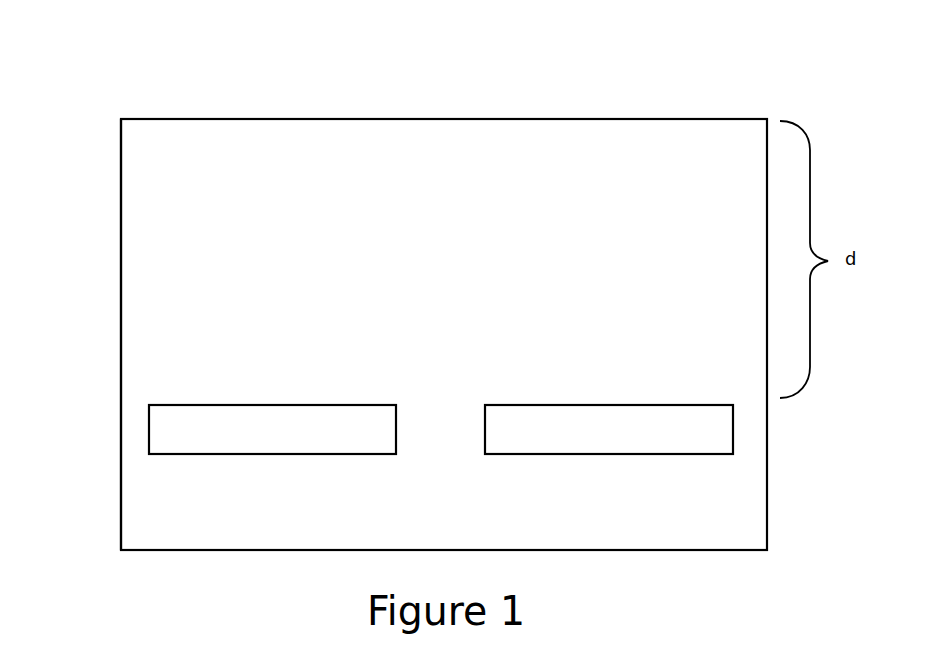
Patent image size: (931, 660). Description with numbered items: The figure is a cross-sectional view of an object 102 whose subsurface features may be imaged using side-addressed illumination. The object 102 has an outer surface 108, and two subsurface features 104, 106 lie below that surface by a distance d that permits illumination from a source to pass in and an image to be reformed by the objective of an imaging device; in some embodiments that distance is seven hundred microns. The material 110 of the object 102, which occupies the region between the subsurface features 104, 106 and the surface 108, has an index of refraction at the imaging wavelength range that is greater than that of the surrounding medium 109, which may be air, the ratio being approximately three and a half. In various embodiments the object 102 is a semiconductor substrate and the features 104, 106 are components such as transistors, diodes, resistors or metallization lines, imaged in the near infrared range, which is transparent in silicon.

The object 102 is at (519, 58).
The subsurface feature 104 is at (319, 405).
The subsurface feature 106 is at (635, 405).
The outer surface 108 is at (268, 119).
The surrounding medium 109 is at (54, 248).
The material 110 is at (153, 139).